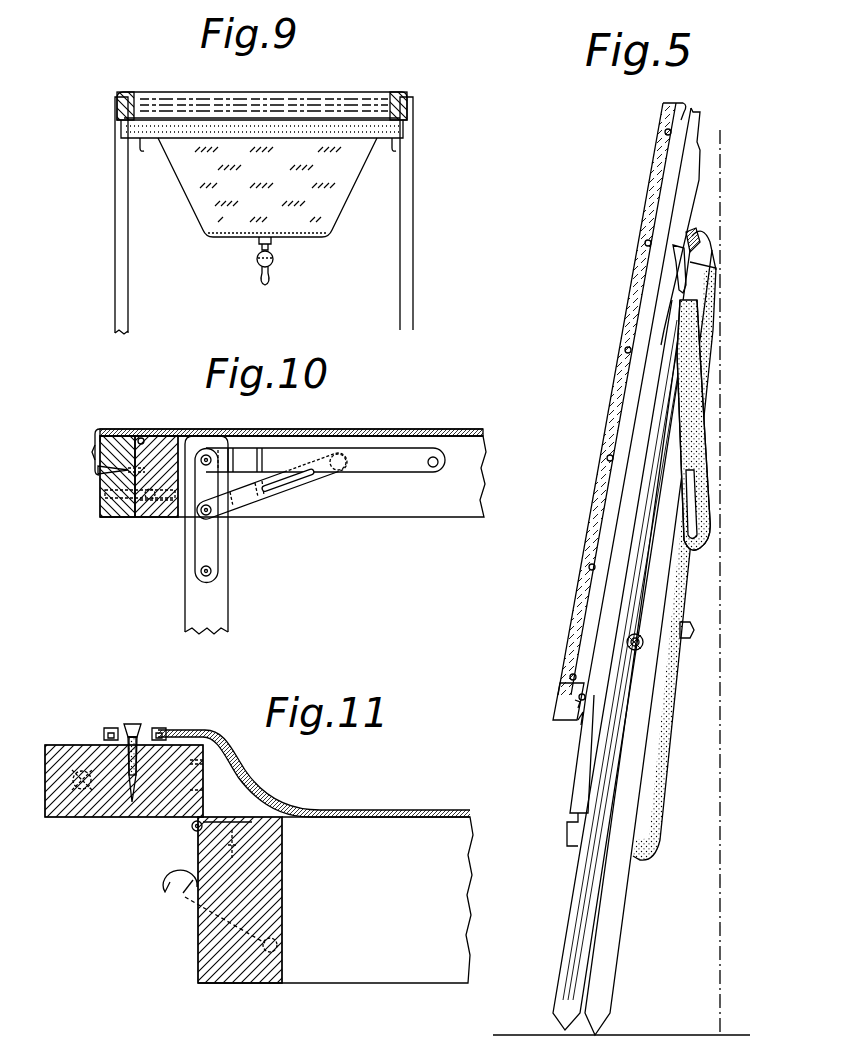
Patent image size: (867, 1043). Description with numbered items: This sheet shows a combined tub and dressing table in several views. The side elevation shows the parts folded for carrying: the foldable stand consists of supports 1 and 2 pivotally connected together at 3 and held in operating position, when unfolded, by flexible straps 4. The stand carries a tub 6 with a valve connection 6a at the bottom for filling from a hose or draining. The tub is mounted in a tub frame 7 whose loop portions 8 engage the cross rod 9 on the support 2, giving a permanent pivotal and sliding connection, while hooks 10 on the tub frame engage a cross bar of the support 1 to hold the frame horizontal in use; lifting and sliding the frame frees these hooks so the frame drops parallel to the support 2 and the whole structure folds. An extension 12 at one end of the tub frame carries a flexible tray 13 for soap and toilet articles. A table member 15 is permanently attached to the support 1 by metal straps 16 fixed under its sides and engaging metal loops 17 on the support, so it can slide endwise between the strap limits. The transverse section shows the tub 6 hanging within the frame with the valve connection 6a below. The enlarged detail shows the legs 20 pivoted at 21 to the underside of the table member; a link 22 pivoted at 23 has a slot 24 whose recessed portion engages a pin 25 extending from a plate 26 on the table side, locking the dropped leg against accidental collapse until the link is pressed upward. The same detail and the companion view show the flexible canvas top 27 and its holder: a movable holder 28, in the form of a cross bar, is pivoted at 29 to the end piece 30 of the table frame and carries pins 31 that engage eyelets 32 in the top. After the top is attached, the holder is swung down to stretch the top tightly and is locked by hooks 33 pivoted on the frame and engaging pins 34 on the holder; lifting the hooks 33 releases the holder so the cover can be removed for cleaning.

In FIG. 5, the support 1 is at (665, 388).
In FIG. 9, the support 2 is at (414, 230).
In FIG. 5, the support 2 is at (708, 321).
In FIG. 5, the pivot 3 is at (645, 636).
In FIG. 5, the flexible straps 4 is at (708, 440).
In FIG. 9, the tub 6 is at (207, 202).
In FIG. 5, the tub 6 is at (676, 676).
In FIG. 9, the valve connection 6a is at (274, 260).
In FIG. 5, the valve connection 6a is at (696, 630).
In FIG. 9, the tub frame 7 is at (397, 101).
In FIG. 5, the tub frame 7 is at (590, 775).
In FIG. 9, the loop portions 8 is at (141, 150).
In FIG. 9, the cross rod 9 is at (300, 130).
In FIG. 5, the hooks 10 is at (567, 832).
In FIG. 5, the extension 12 is at (697, 236).
In FIG. 5, the flexible tray 13 is at (712, 250).
In FIG. 10, the table member 15 is at (432, 508).
In FIG. 11, the table member 15 is at (407, 965).
In FIG. 5, the table member 15 is at (672, 212).
In FIG. 5, the straps 16 is at (692, 192).
In FIG. 5, the metal loops 17 is at (677, 268).
In FIG. 10, the legs 20 is at (229, 598).
In FIG. 10, the pivot 21 is at (206, 455).
In FIG. 10, the links 22 is at (265, 492).
In FIG. 10, the pivot 23 is at (200, 515).
In FIG. 10, the slot 24 is at (318, 478).
In FIG. 10, the pins 25 is at (348, 447).
In FIG. 10, the plates 26 is at (392, 455).
In FIG. 10, the flexible top 27 is at (238, 423).
In FIG. 11, the flexible top 27 is at (432, 801).
In FIG. 5, the flexible top 27 is at (648, 170).
In FIG. 10, the movable holder 28 is at (110, 500).
In FIG. 11, the movable holder 28 is at (77, 805).
In FIG. 5, the movable holder 28 is at (566, 712).
In FIG. 10, the pivot 29 is at (141, 437).
In FIG. 11, the pivot 29 is at (192, 829).
In FIG. 10, the end piece 30 is at (145, 510).
In FIG. 11, the end piece 30 is at (245, 975).
In FIG. 10, the pins 31 is at (97, 470).
In FIG. 11, the pins 31 is at (134, 722).
In FIG. 10, the eyelets 32 is at (93, 456).
In FIG. 11, the eyelets 32 is at (163, 728).
In FIG. 10, the hooks 33 is at (118, 520).
In FIG. 11, the hooks 33 is at (185, 898).
In FIG. 5, the hooks 33 is at (560, 698).
In FIG. 11, the pins 34 is at (75, 745).
In FIG. 5, the pins 34 is at (576, 724).